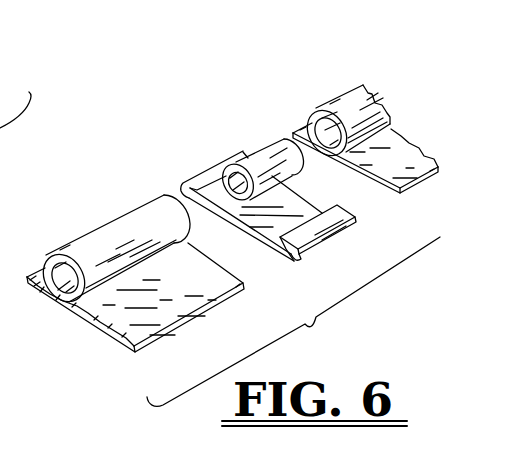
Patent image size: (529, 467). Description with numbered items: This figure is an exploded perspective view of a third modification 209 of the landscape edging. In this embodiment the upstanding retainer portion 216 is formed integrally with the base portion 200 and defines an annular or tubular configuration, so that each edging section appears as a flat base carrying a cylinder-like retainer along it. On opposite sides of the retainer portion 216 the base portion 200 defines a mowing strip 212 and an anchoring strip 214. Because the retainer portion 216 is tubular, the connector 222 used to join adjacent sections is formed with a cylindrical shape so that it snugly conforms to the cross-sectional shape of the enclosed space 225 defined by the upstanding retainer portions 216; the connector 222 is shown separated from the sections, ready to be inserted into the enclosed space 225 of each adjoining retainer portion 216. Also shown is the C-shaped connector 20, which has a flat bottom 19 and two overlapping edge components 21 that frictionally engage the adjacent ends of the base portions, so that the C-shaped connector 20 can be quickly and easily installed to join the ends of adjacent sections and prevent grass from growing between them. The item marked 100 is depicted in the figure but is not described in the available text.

The fabric web 100 is at (0, 38).
The flat bottom 19 is at (258, 244).
The C-shaped connector 20 is at (291, 204).
The overlapping edge components 21 is at (210, 184).
The base portion 200 is at (108, 344).
The third modification 209 is at (137, 200).
The mowing strip 212 is at (208, 296).
The anchoring strip 214 is at (43, 272).
The upstanding retainer portion 216 is at (96, 222).
The connector 222 is at (261, 141).
The enclosed space 225 is at (70, 298).